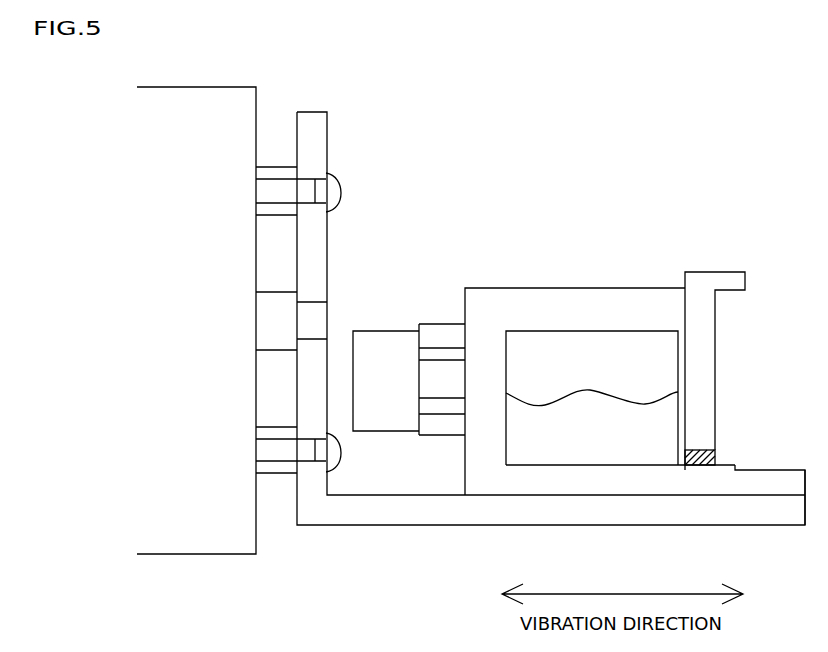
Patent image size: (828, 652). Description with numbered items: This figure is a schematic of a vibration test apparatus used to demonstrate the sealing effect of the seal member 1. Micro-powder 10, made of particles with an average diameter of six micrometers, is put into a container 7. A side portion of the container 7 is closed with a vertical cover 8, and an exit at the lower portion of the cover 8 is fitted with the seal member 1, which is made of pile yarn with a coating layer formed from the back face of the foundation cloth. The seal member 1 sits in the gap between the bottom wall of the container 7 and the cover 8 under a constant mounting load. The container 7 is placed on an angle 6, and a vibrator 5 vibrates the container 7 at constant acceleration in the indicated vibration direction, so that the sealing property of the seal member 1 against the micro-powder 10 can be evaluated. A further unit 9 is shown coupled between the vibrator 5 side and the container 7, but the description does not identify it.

The seal member 1 is at (718, 456).
The vibrator 5 is at (213, 517).
The angle 6 is at (388, 508).
The container 7 is at (590, 305).
The vertical cover 8 is at (703, 328).
The connector unit 9 is at (390, 355).
The micro-powder 10 is at (560, 428).